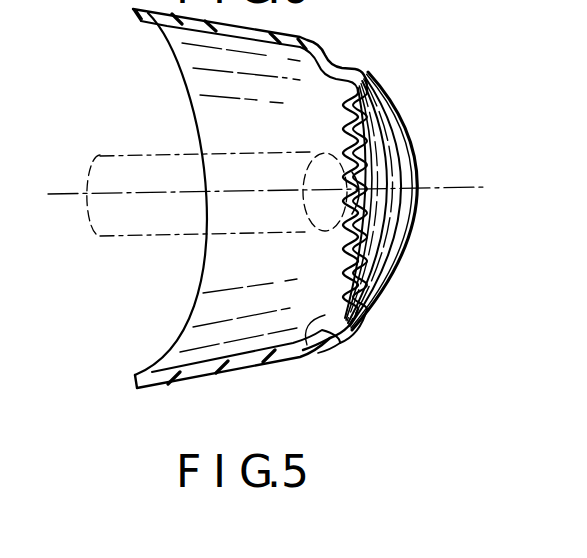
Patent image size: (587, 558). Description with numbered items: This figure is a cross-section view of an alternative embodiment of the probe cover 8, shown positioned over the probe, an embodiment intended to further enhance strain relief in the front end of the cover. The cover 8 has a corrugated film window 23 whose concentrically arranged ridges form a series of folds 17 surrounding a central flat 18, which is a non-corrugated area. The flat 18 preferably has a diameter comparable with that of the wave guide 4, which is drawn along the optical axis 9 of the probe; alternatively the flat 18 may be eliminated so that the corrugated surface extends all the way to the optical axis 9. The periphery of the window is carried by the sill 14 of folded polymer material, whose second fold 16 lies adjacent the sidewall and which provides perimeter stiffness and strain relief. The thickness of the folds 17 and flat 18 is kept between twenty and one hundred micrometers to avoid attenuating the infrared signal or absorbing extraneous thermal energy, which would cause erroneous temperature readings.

The wave guide 4 is at (100, 172).
The probe cover 8 is at (160, 340).
The optical axis 9 is at (58, 194).
The sill 14 is at (378, 84).
The second fold 16 is at (308, 345).
The folds 17 is at (366, 182).
The central flat 18 is at (380, 226).
The corrugated film window 23 is at (388, 134).